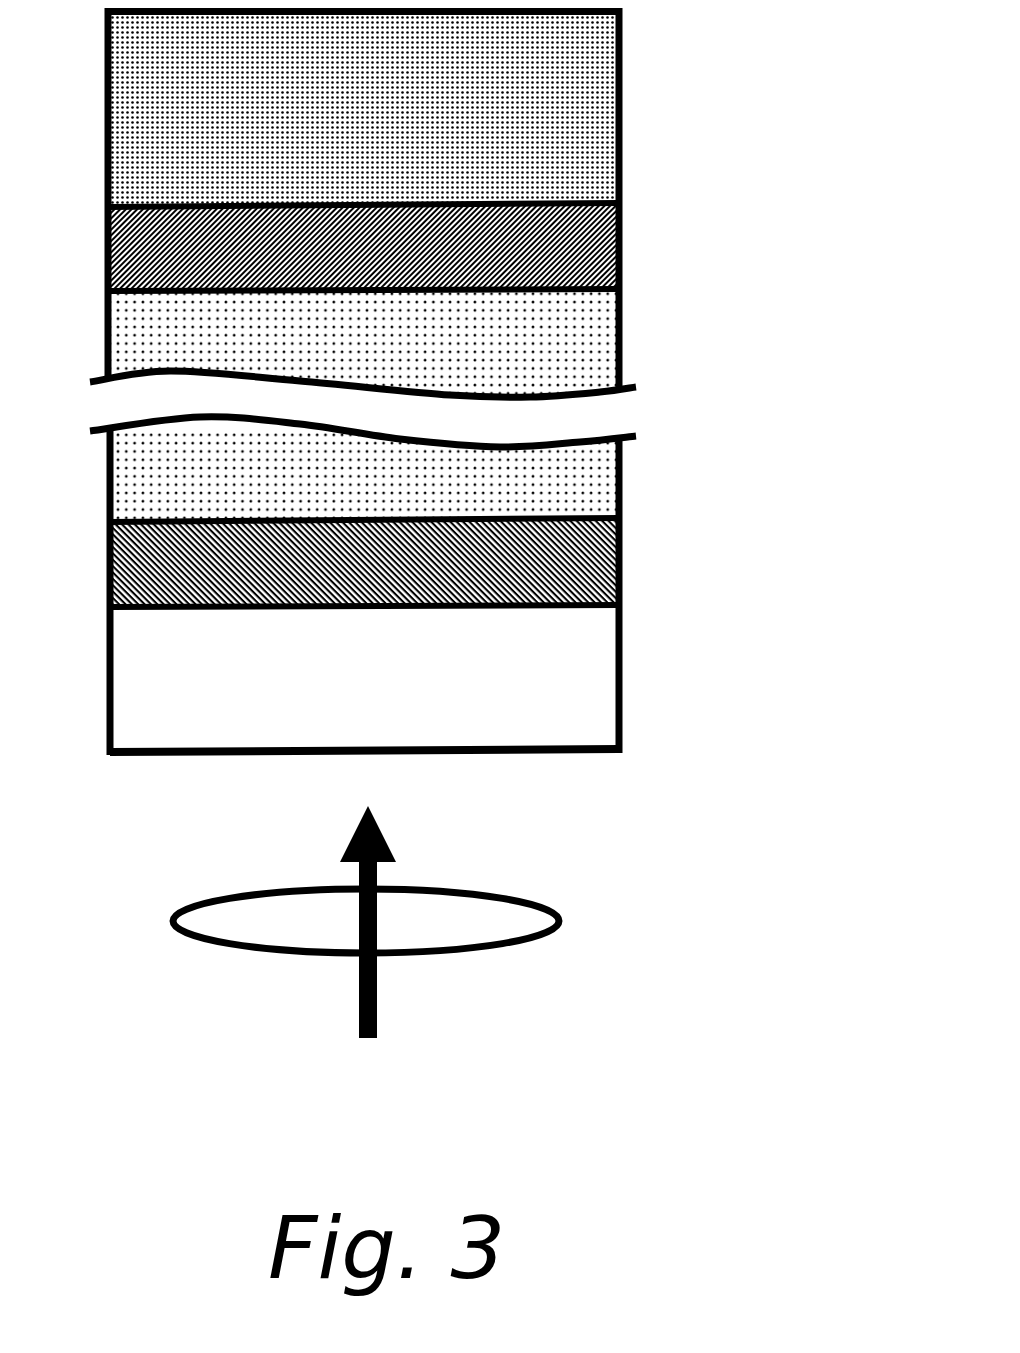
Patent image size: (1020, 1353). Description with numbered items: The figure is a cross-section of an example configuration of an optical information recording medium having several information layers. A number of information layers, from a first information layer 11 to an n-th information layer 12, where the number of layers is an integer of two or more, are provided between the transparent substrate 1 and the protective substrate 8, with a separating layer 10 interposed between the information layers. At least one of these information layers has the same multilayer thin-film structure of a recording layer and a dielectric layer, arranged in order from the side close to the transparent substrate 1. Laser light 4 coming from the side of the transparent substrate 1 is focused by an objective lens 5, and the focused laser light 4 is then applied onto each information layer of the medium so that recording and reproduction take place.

The transparent substrate 1 is at (619, 664).
The laser light 4 is at (377, 996).
The objective lens 5 is at (560, 920).
The protective substrate 8 is at (619, 112).
The separating layer 10 is at (619, 330).
The first information layer 11 is at (619, 560).
The n-th information layer 12 is at (619, 247).